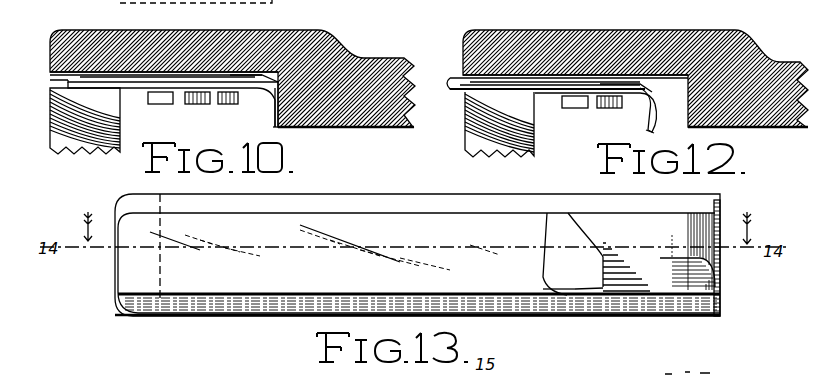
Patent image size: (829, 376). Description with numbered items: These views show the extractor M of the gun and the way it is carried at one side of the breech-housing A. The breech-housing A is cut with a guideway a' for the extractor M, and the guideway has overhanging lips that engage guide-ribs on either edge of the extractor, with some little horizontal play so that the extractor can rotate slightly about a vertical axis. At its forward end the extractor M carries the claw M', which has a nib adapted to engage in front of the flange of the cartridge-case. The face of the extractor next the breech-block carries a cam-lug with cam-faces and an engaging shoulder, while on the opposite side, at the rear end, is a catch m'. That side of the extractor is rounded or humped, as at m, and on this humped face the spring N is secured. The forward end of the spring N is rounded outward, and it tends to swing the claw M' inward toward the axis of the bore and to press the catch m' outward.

In FIG. 10, the breech-housing A is at (346, 56).
In FIG. 12, the breech-housing A is at (753, 61).
In FIG. 10, the spring N is at (263, 74).
In FIG. 12, the spring N is at (636, 82).
In FIG. 10, the extractor M is at (171, 109).
In FIG. 12, the extractor M is at (560, 124).
In FIG. 13, the extractor M is at (275, 254).
In FIG. 10, the claw M' is at (258, 106).
In FIG. 12, the claw M' is at (657, 110).
In FIG. 13, the claw M' is at (687, 235).
In FIG. 10, the humped face m is at (167, 45).
In FIG. 12, the humped face m is at (555, 48).
In FIG. 10, the catch m' is at (164, 44).
In FIG. 12, the catch m' is at (557, 68).
In FIG. 10, the block a is at (160, 110).
In FIG. 12, the block a is at (575, 113).
In FIG. 10, the guideway a' is at (73, 117).